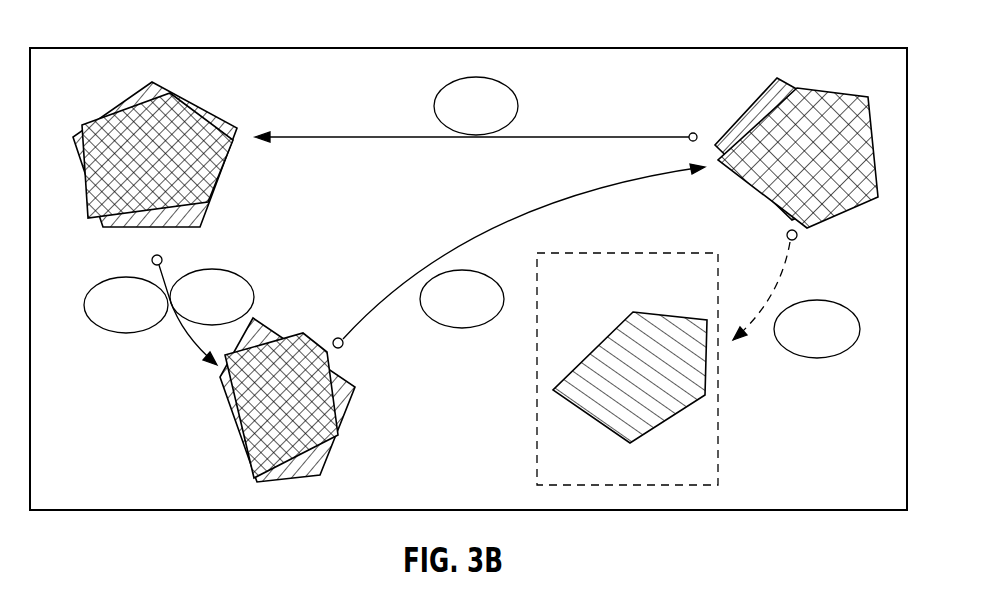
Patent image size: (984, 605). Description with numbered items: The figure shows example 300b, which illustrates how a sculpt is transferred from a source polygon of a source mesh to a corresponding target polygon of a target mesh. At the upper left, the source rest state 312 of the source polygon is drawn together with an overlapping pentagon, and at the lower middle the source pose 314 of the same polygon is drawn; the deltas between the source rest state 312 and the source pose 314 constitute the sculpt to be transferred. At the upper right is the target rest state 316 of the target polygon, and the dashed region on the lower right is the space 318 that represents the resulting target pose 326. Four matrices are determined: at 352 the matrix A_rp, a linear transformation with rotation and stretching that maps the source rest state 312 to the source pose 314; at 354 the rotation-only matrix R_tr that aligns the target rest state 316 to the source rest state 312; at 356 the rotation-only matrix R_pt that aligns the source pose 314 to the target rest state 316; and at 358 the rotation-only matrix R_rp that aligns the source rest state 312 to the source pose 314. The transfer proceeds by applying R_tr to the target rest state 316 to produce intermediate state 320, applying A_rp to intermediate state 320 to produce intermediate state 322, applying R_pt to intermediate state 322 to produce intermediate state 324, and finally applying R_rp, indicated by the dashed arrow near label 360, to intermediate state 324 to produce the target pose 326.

The example 300b is at (132, 48).
The source rest state 312 is at (203, 208).
The intermediate state 320 is at (82, 205).
The matrix R_tr determination 354 is at (497, 82).
The target rest state 316 is at (738, 120).
The intermediate state 324 is at (886, 86).
The matrix R_rp determination 358 is at (117, 333).
The matrix A_rp determination 352 is at (248, 279).
The intermediate state 322 is at (228, 412).
The source pose 314 is at (347, 372).
The matrix R_pt determination 356 is at (462, 328).
The space 318 is at (587, 252).
The target pose 326 is at (630, 320).
The relative pose rotation R_rp (target) 360 is at (825, 300).